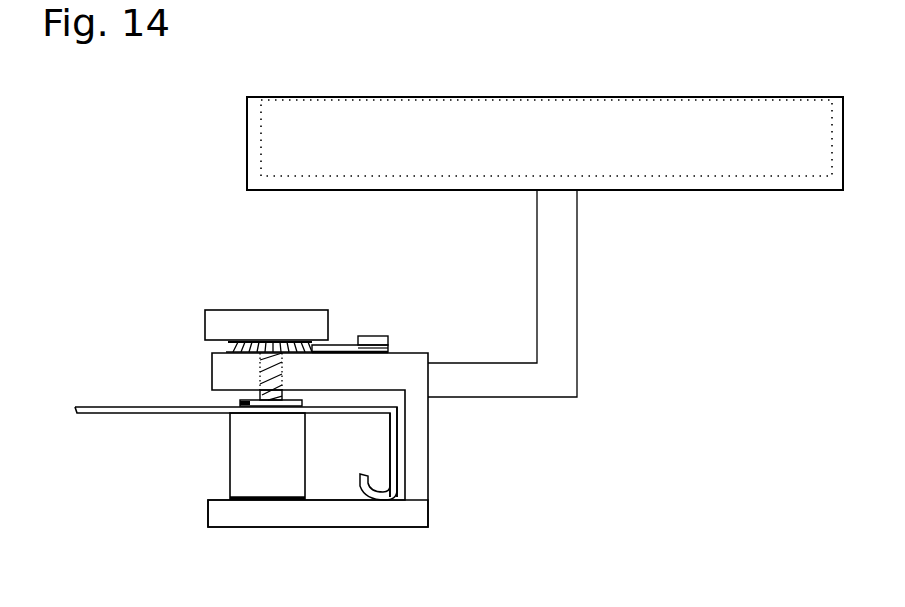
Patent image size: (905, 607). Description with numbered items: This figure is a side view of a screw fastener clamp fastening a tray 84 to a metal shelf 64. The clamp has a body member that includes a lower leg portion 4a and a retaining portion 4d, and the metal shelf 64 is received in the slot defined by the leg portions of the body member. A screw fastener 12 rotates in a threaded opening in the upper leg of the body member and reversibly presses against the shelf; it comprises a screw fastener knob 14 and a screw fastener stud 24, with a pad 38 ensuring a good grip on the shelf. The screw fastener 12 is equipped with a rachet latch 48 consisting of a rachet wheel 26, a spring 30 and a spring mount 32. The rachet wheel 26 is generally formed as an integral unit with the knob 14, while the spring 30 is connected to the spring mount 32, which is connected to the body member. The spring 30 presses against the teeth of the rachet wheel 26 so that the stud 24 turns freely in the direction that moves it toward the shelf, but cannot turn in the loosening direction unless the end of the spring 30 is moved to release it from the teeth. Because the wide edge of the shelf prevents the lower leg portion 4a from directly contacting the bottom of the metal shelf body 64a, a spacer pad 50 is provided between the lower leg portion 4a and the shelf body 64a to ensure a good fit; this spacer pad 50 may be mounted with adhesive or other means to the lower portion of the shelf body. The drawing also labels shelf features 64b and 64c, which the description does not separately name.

The tray 84 is at (630, 195).
The retaining portion 4d is at (552, 337).
The lower leg portion 4a is at (288, 515).
The screw fastener 12 is at (226, 309).
The screw fastener knob 14 is at (265, 328).
The rachet wheel 26 is at (230, 347).
The spring 30 is at (332, 347).
The rachet latch 48 is at (372, 334).
The spring mount 32 is at (389, 343).
The screw fastener stud 24 is at (260, 397).
The pad 38 is at (247, 405).
The metal shelf 64 is at (127, 418).
The metal shelf body 64a is at (180, 410).
The arm vertical portion 64b is at (393, 445).
The arm hook end 64c is at (375, 497).
The spacer pad 50 is at (258, 462).